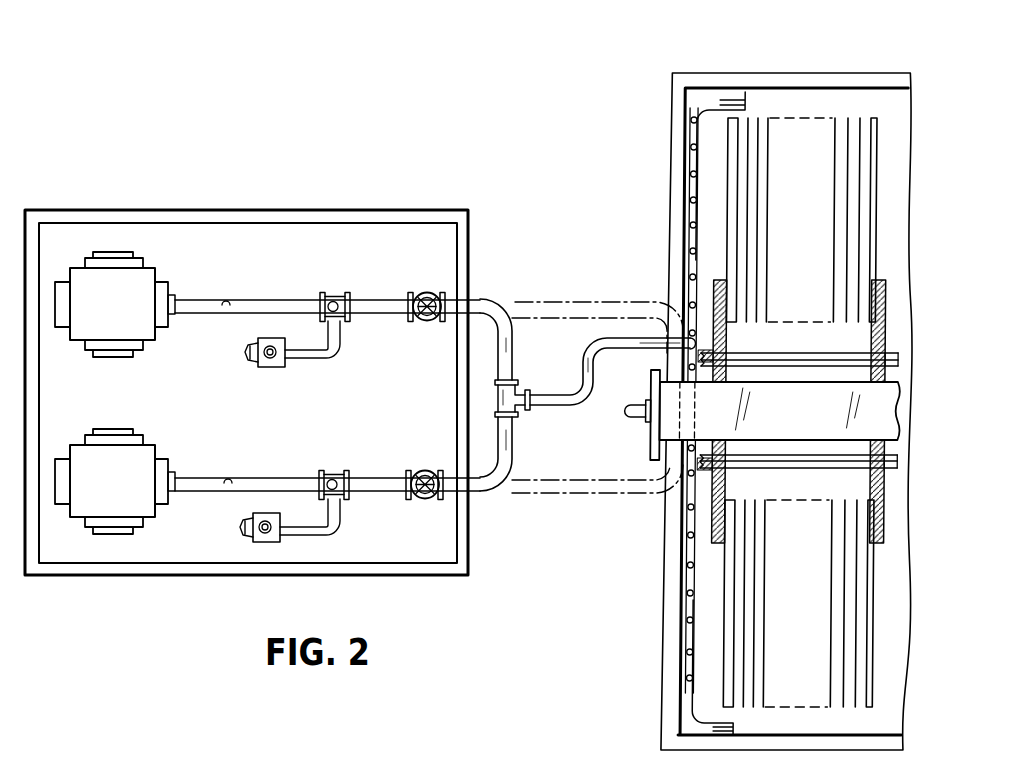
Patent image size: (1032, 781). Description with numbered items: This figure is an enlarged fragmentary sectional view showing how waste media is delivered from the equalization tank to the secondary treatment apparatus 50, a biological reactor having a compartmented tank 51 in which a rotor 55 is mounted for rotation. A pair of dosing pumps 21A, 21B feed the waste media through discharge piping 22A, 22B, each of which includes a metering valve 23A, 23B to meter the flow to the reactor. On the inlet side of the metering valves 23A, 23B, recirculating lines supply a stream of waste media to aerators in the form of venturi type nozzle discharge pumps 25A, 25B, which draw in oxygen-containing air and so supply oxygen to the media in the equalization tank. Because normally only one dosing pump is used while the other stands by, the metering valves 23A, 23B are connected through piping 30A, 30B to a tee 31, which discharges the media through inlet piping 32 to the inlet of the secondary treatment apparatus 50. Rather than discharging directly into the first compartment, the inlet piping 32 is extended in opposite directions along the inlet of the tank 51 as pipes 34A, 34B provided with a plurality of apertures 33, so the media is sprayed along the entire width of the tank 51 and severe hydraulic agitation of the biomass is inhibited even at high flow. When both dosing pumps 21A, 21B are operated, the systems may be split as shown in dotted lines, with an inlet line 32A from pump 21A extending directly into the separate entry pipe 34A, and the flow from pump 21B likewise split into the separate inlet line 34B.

The dosing pump 21A is at (138, 467).
The dosing pump 21B is at (148, 280).
The discharge piping 22A is at (263, 481).
The discharge piping 22B is at (196, 306).
The metering valve 23A is at (423, 472).
The metering valve 23B is at (428, 292).
The venturi type nozzle discharge pump 25A is at (253, 540).
The venturi type nozzle discharge pump 25B is at (278, 368).
The piping 30A is at (510, 460).
The piping 30B is at (512, 358).
The tee 31 is at (518, 408).
The inlet piping 32 is at (580, 391).
The inlet line 32A is at (603, 493).
The apertures 33 is at (688, 653).
The entry pipe 34A is at (687, 583).
The inlet line 34B is at (687, 190).
The secondary treatment apparatus 50 is at (764, 384).
The tank 51 is at (842, 95).
The rotor 55 is at (809, 421).